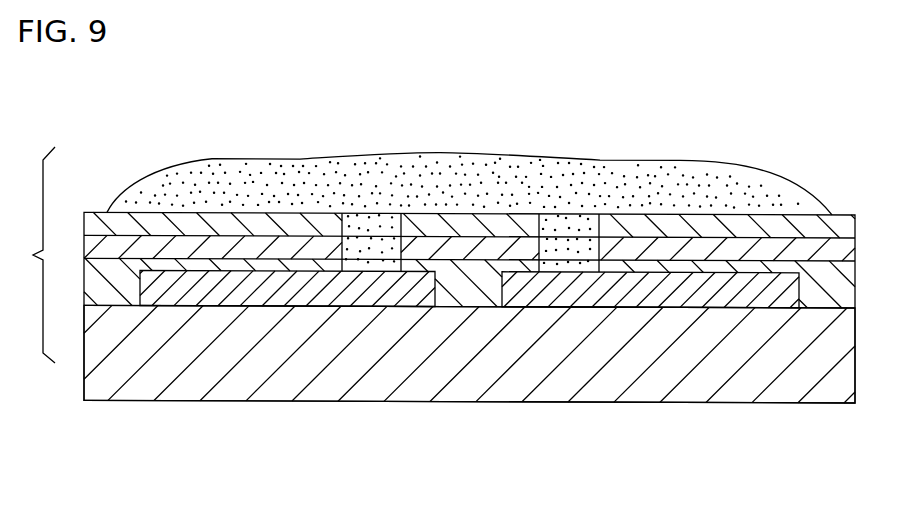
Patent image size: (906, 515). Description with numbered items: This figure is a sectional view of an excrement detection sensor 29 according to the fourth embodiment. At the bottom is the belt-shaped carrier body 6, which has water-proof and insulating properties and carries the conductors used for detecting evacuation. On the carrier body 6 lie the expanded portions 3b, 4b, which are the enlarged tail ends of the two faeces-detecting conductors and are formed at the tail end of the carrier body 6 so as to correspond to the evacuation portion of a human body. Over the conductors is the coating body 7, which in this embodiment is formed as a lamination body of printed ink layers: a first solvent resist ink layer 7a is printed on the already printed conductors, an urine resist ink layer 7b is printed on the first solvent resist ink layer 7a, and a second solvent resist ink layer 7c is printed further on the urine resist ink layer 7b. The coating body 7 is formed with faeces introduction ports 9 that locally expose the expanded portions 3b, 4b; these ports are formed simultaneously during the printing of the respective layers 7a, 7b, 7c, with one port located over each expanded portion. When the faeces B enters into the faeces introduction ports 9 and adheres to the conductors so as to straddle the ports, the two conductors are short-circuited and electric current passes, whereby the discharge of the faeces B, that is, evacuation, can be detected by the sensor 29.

The excrement detection sensor 29 is at (466, 424).
The coating body 7 is at (436, 255).
The first solvent resist ink layer 7a is at (82, 295).
The urine resist ink layer 7b is at (88, 246).
The second solvent resist ink layer 7c is at (84, 227).
The expanded portion 3b is at (231, 297).
The expanded portion 4b is at (693, 297).
The carrier body 6 is at (567, 383).
The faeces introduction port 9 is at (348, 249).
The faeces B is at (465, 168).